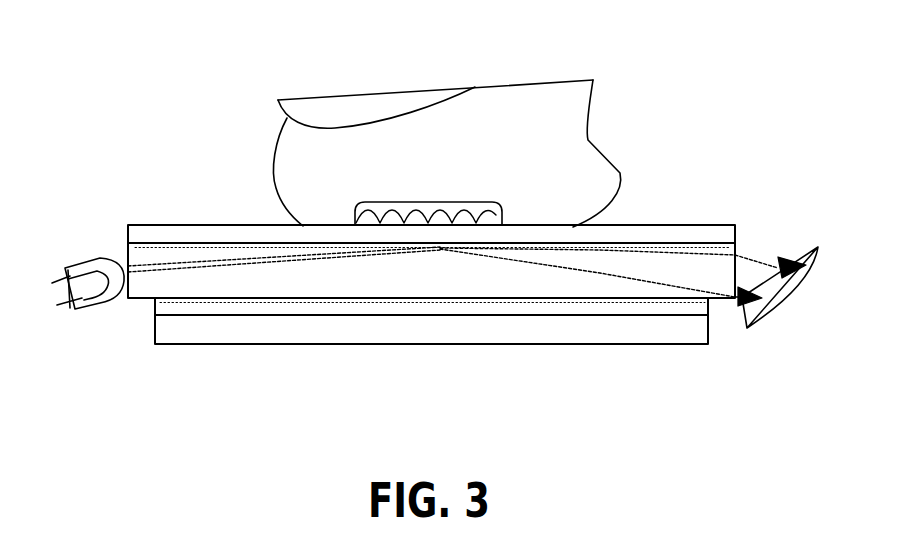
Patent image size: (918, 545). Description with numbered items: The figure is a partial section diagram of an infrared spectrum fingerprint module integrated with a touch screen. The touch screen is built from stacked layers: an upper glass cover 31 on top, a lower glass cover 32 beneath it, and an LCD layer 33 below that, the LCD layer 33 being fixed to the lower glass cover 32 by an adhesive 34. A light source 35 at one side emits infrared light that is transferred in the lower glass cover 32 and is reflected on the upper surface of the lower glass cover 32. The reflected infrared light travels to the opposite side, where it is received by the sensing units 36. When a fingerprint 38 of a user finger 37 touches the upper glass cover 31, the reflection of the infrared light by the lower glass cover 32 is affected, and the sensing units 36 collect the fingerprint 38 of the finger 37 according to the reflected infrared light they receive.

The upper glass cover 31 is at (643, 227).
The lower glass cover 32 is at (223, 252).
The LCD layer 33 is at (698, 333).
The adhesive 34 is at (157, 317).
The light source 35 is at (96, 310).
The sensing units 36 is at (787, 283).
The user finger 37 is at (553, 78).
The fingerprint 38 is at (373, 207).